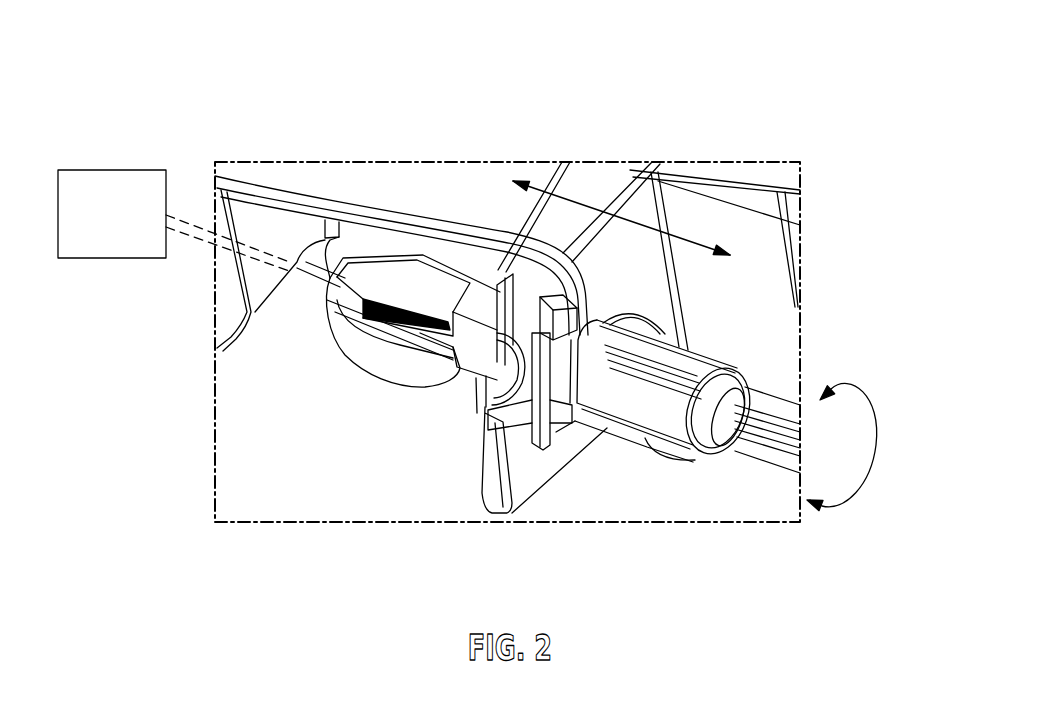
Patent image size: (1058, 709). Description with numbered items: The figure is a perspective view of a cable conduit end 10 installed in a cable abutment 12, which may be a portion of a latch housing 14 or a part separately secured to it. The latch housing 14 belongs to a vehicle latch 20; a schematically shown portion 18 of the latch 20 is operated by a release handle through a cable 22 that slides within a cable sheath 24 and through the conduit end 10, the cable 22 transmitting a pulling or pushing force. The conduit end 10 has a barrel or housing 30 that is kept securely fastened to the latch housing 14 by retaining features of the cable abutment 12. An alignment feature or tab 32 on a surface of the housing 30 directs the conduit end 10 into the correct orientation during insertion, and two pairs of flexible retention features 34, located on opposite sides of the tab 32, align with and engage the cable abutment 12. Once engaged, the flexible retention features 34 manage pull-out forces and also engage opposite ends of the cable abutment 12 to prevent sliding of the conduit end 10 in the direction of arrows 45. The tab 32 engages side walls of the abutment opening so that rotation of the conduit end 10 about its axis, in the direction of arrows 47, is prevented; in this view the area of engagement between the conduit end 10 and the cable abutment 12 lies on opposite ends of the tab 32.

The cable conduit end 10 is at (670, 328).
The cable abutment 12 is at (503, 229).
The latch housing 14 is at (355, 178).
The portion of the latch 18 is at (90, 260).
The latch 20 is at (881, 62).
The cable 22 is at (209, 240).
The cable sheath 24 is at (762, 448).
The housing 30 is at (425, 357).
The alignment feature or tab 32 is at (489, 377).
The flexible retention features 34 is at (512, 262).
The arrows 45 is at (665, 192).
The arrows 47 is at (848, 383).